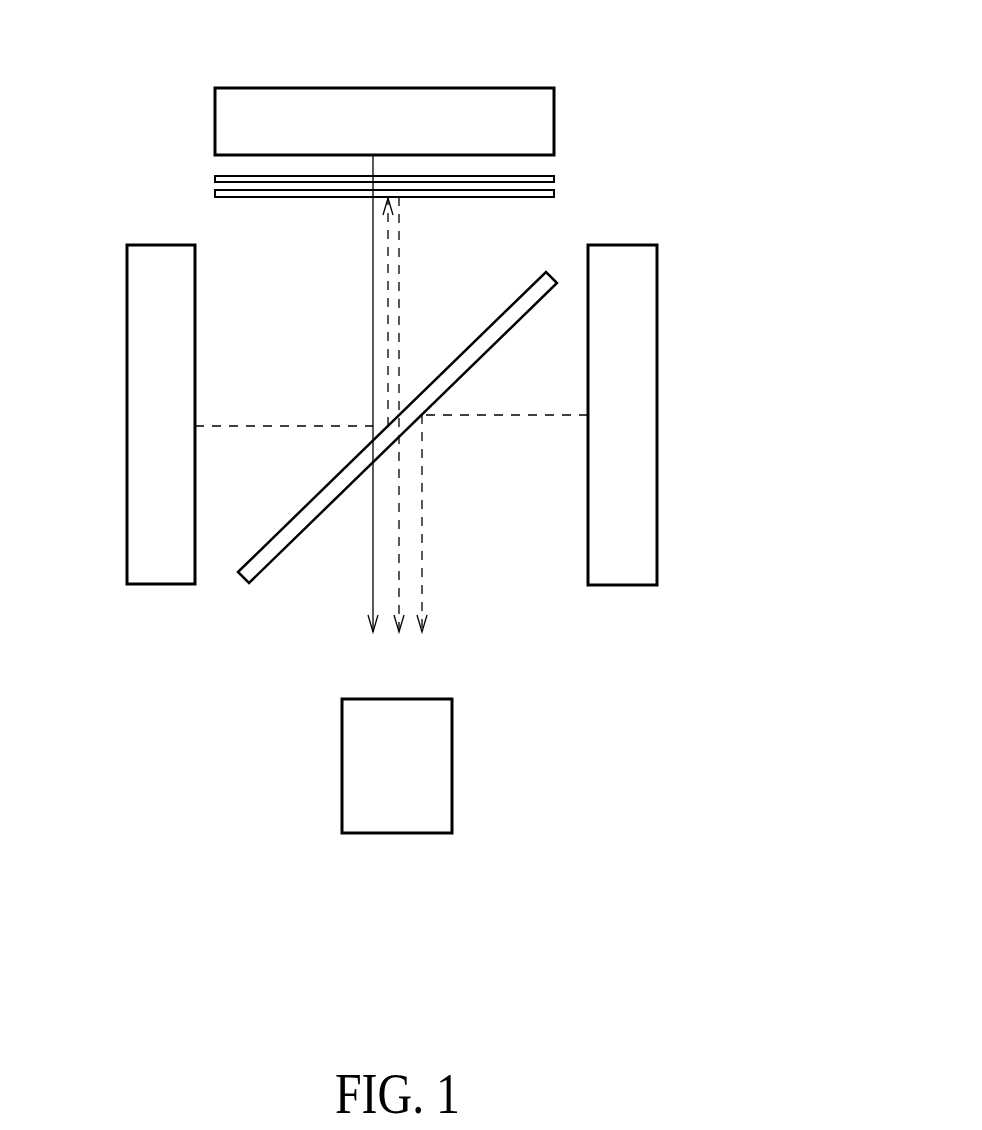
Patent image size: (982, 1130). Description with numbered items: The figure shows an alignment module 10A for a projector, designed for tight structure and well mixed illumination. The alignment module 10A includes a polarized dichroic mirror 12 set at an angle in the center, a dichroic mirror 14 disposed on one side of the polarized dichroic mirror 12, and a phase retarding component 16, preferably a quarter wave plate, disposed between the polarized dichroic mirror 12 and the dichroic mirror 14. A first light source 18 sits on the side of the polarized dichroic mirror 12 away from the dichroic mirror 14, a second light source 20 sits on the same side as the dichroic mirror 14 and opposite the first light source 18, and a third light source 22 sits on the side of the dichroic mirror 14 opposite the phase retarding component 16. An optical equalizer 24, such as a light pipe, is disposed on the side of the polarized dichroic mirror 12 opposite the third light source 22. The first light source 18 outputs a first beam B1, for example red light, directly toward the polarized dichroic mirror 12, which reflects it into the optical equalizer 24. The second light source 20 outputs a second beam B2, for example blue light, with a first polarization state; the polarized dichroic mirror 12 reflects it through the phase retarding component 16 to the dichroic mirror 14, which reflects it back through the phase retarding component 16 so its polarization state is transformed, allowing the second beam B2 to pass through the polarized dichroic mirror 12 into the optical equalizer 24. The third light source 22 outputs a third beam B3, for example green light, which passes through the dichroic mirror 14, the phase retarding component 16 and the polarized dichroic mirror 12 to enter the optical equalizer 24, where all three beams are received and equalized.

The alignment module 10A is at (728, 72).
The polarized dichroic mirror 12 is at (290, 545).
The dichroic mirror 14 is at (557, 176).
The phase retarding component 16 is at (557, 193).
The first light source 18 is at (657, 473).
The second light source 20 is at (127, 465).
The third light source 22 is at (475, 88).
The optical equalizer 24 is at (452, 770).
The first beam B1 is at (503, 413).
The second beam B2 is at (357, 414).
The third beam B3 is at (371, 290).